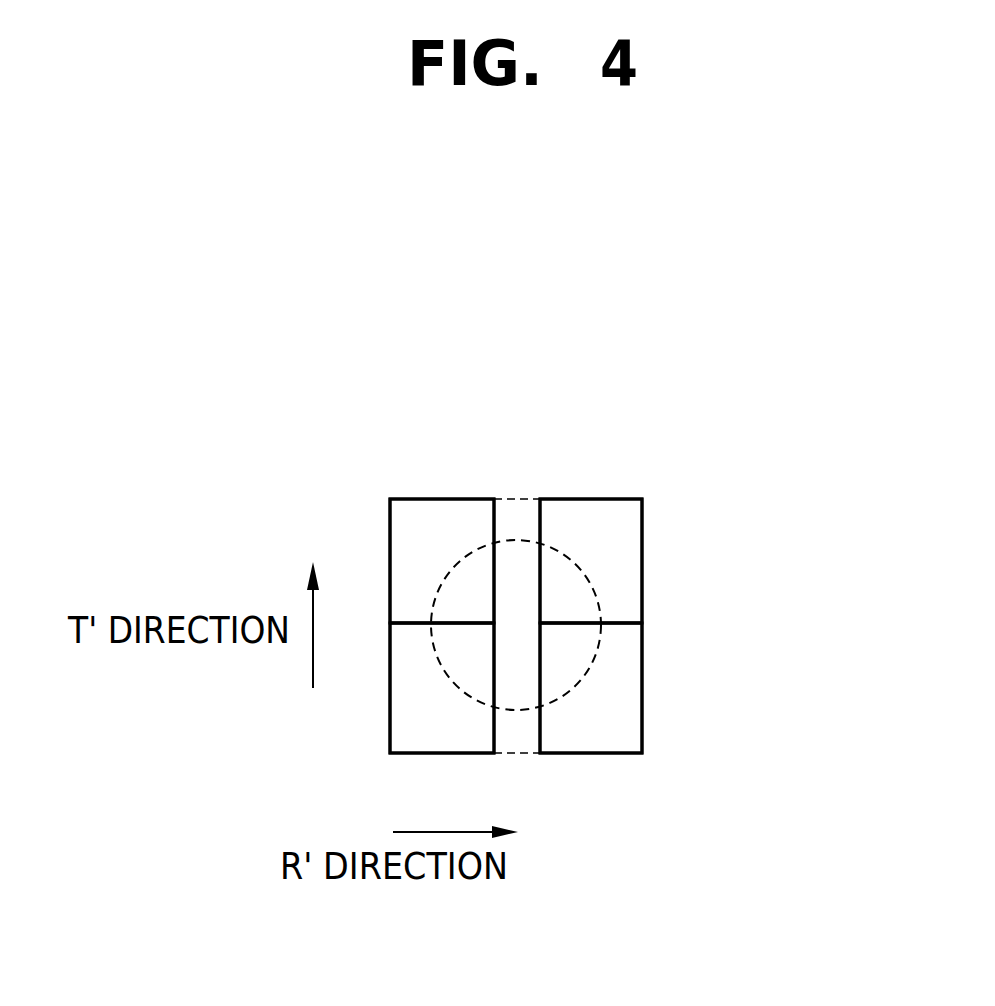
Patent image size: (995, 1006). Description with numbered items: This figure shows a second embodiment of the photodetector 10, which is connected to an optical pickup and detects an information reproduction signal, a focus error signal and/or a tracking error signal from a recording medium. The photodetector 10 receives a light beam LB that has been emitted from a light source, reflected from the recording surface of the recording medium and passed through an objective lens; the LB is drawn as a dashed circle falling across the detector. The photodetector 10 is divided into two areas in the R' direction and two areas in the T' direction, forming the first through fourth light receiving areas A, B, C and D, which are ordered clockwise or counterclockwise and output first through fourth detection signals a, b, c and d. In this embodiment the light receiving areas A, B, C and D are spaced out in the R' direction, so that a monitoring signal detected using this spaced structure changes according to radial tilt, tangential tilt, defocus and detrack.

The photodetector 10 is at (381, 470).
The first light receiving area A is at (442, 561).
The second light receiving area B is at (442, 688).
The third light receiving area C is at (591, 688).
The fourth light receiving area D is at (591, 561).
The light beam LB is at (485, 543).